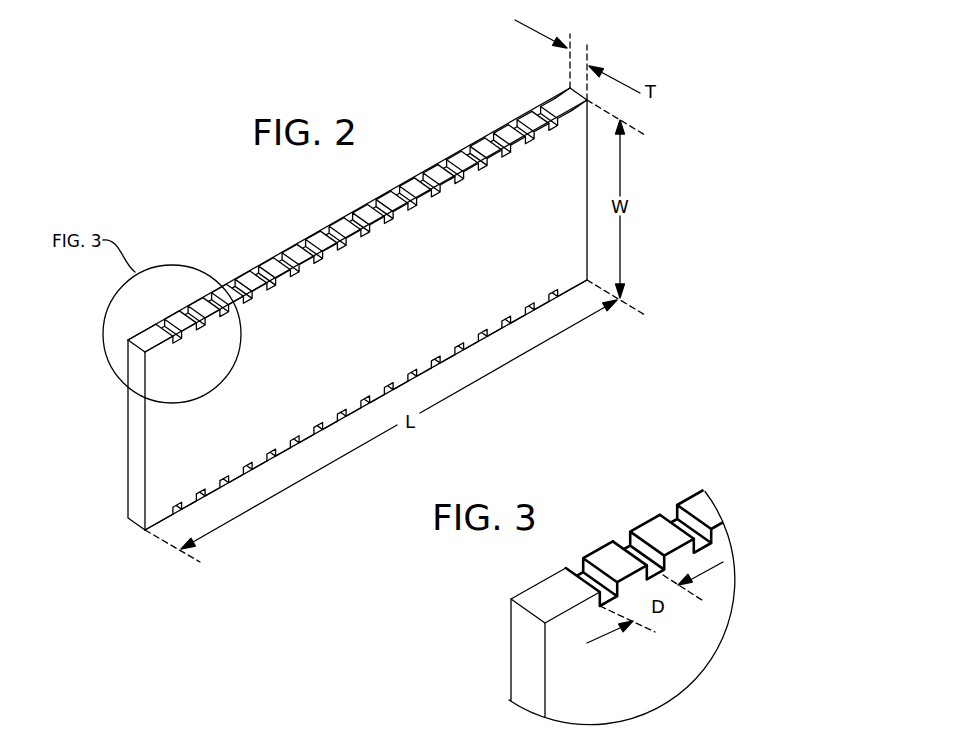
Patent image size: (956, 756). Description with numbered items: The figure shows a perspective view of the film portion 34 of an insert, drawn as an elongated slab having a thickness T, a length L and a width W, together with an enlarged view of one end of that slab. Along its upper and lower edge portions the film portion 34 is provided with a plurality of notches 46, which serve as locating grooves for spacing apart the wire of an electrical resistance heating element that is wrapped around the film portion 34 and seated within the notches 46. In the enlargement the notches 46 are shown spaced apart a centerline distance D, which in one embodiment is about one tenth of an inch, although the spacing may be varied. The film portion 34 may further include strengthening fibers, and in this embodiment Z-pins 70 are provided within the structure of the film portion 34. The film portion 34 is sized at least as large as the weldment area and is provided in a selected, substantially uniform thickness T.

In FIG. 2, the film portion 34 is at (310, 309).
In FIG. 3, the film portion 34 is at (490, 667).
In FIG. 2, the notches 46 is at (451, 162).
In FIG. 3, the notches 46 is at (604, 600).
In FIG. 2, the Z-pins 70 is at (135, 417).